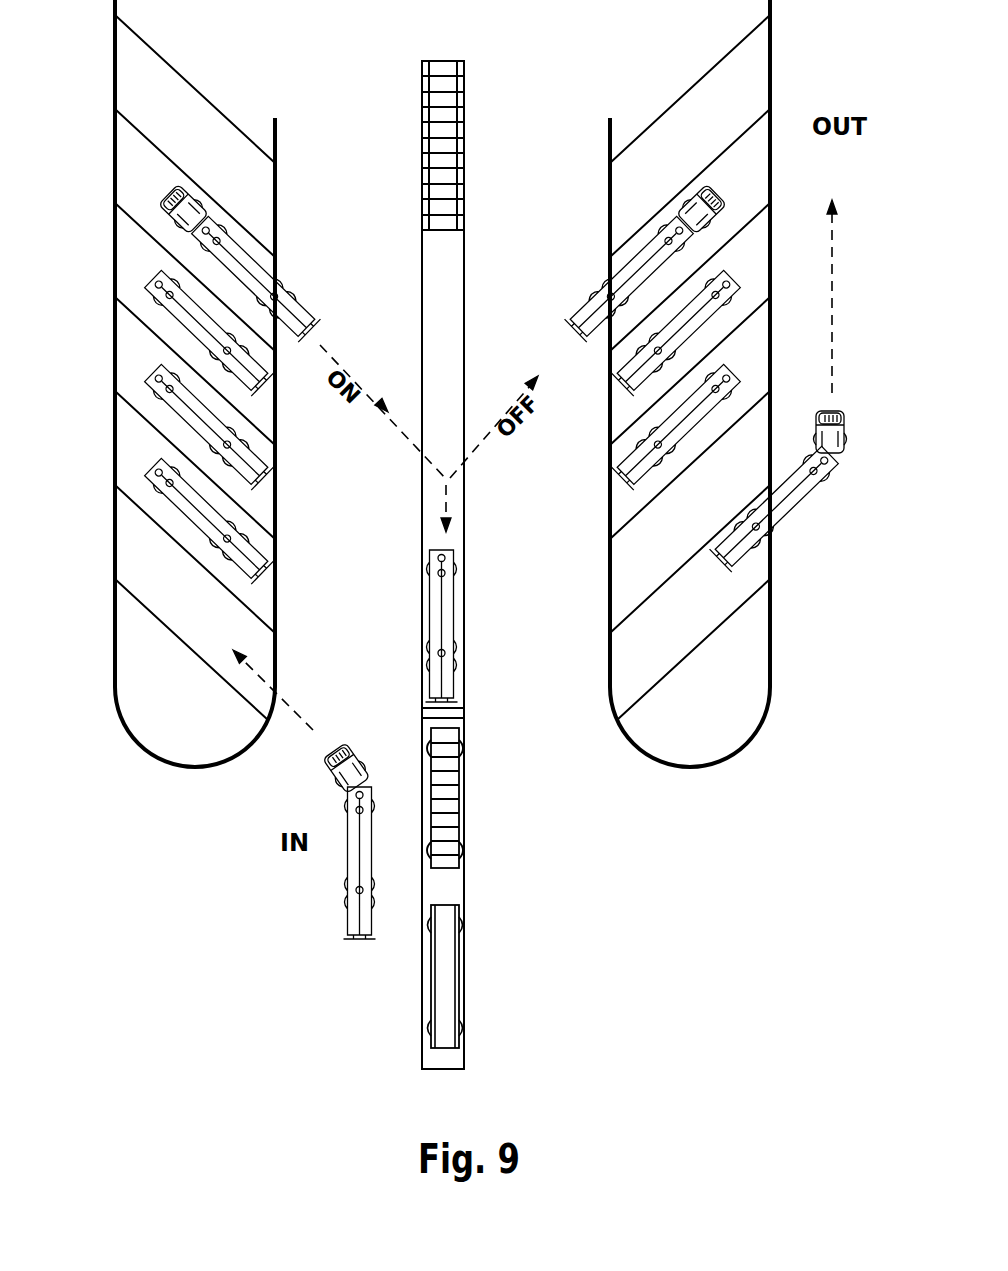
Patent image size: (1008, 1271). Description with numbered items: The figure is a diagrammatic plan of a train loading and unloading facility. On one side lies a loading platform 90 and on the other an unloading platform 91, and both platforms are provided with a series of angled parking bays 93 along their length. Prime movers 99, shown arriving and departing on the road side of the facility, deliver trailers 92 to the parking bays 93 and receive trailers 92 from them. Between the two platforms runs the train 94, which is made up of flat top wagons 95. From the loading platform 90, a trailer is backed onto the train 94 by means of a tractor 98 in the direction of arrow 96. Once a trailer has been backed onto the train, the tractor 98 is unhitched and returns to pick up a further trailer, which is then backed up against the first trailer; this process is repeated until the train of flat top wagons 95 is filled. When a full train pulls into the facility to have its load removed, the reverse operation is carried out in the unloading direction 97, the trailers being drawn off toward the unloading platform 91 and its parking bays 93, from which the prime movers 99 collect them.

The loading platform 90 is at (362, 568).
The unloading platform 91 is at (512, 572).
The trailer 92 is at (347, 905).
The parking bays 93 is at (133, 333).
The train 94 is at (452, 692).
The flat top wagons 95 is at (463, 325).
The arrow 96 is at (405, 423).
The unloading direction 97 is at (480, 435).
The tractor 98 is at (165, 205).
The prime movers 99 is at (318, 765).